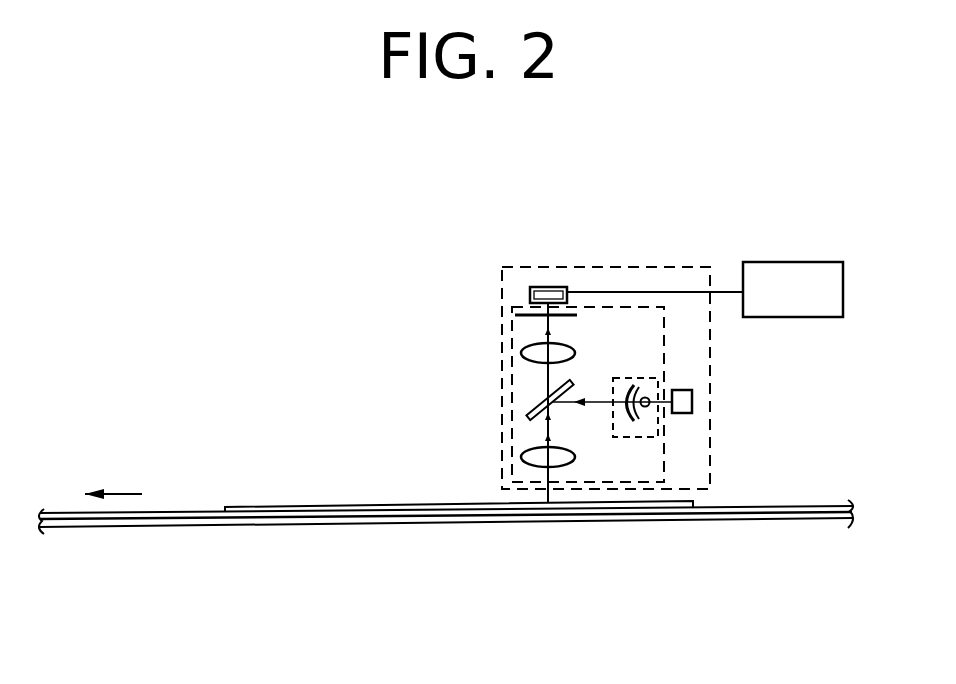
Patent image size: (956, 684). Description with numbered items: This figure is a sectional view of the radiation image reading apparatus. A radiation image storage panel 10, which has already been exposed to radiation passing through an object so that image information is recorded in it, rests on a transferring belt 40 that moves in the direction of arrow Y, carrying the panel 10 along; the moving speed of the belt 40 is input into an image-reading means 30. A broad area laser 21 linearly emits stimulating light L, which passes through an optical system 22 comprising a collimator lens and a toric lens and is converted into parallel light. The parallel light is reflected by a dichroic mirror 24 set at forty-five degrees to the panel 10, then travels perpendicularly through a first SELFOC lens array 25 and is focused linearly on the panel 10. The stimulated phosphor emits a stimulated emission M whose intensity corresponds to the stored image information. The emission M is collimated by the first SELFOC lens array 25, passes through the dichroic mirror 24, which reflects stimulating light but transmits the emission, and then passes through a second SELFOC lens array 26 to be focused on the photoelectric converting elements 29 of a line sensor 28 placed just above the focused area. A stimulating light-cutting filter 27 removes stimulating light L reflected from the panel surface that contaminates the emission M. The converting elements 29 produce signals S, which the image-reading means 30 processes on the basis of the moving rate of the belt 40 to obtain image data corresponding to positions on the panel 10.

The radiation image storage panel 10 is at (268, 507).
The broad area laser 21 is at (692, 399).
The optical system 22 is at (635, 391).
The dichroic mirror 24 is at (528, 420).
The first SELFOC lens array 25 is at (572, 458).
The second SELFOC lens array 26 is at (522, 348).
The stimulating light-cutting filter 27 is at (515, 315).
The line sensor 28 is at (524, 284).
The photoelectric converting elements 29 is at (530, 298).
The image-reading means 30 is at (810, 262).
The transferring belt 40 is at (783, 506).
The signals S is at (659, 292).
The stimulated emission M is at (547, 377).
The stimulating light L is at (593, 397).
The arrow Y is at (116, 494).